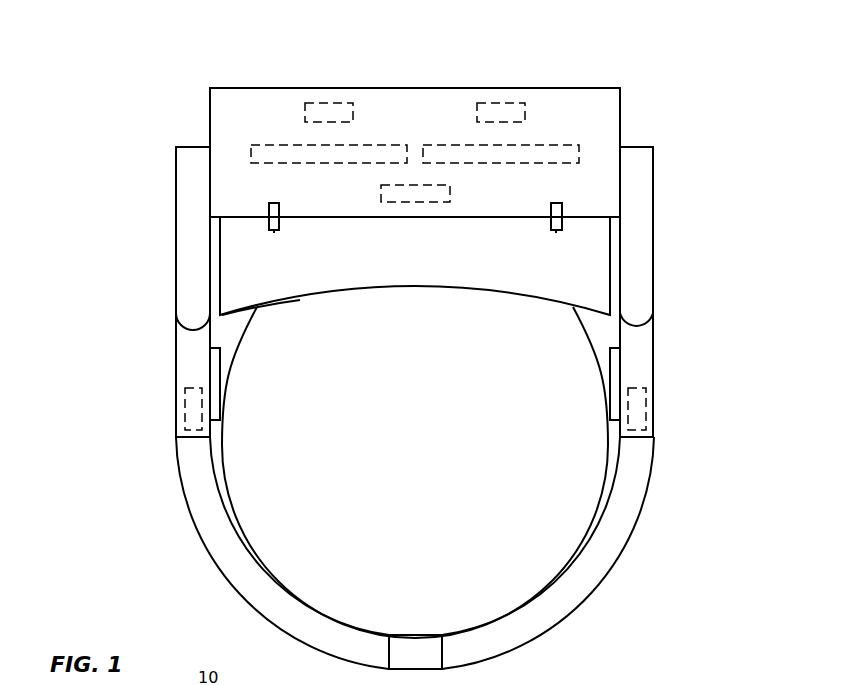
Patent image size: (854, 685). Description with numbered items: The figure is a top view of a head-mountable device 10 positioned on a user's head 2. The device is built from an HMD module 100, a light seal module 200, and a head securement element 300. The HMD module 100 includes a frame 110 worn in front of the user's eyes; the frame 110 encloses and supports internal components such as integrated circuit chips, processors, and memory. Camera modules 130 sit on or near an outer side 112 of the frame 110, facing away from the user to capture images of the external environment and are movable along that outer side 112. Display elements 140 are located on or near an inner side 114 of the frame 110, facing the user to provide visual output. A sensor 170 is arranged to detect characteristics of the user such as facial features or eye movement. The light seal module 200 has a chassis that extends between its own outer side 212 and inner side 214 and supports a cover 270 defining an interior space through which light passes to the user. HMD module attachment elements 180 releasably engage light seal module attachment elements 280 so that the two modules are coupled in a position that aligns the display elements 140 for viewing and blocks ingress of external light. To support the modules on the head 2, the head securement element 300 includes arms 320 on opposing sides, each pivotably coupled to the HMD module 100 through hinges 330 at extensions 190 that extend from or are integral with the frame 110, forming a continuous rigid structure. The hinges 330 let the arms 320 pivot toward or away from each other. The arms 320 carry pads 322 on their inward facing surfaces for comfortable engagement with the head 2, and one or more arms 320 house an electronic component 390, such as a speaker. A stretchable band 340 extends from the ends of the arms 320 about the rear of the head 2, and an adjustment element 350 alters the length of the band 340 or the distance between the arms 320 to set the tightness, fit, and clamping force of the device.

The head-mountable device 10 is at (199, 74).
The HMD module 100 is at (210, 92).
The frame 110 is at (218, 116).
The outer side 112 is at (603, 88).
The inner side 114 is at (622, 217).
The camera modules 130 is at (322, 103).
The display elements 140 is at (380, 145).
The sensor 170 is at (417, 203).
The HMD module attachment elements 180 is at (280, 212).
The extensions 190 is at (190, 218).
The light seal module 200 is at (222, 272).
The outer side 212 is at (220, 217).
The inner side 214 is at (268, 308).
The cover 270 is at (590, 283).
The light seal module attachment elements 280 is at (280, 225).
The head securement element 300 is at (185, 470).
The arms 320 is at (213, 380).
The pads 322 is at (216, 383).
The hinges 330 is at (188, 312).
The band 340 is at (540, 605).
The adjustment element 350 is at (415, 648).
The electronic component 390 is at (205, 410).
The head 2 is at (553, 535).